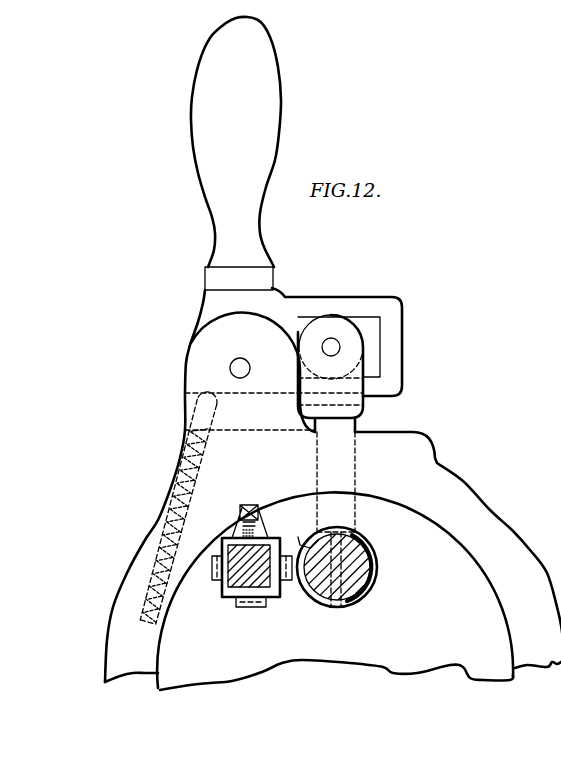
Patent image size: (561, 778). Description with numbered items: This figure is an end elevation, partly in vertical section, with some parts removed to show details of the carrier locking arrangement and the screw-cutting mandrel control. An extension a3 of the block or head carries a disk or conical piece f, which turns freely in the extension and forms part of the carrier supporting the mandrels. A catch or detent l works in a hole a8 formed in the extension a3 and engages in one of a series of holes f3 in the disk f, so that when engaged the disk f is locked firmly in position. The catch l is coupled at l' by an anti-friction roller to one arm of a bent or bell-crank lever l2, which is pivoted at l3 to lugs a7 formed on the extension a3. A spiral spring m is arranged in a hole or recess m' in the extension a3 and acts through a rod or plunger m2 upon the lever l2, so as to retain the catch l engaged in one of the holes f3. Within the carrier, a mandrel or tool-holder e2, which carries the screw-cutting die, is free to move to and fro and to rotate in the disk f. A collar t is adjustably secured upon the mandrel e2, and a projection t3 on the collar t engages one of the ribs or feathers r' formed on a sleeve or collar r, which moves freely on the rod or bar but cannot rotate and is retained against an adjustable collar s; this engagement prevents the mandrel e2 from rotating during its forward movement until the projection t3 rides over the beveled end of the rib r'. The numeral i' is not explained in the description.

The extension a3 is at (333, 486).
The lugs a7 is at (274, 372).
The hole a8 is at (336, 482).
The catch or detent l is at (334, 373).
The coupling of catch to lever l' is at (331, 347).
The bent or bell-crank lever l2 is at (321, 342).
The pivot l3 is at (242, 359).
The spiral spring m is at (178, 511).
The hole or recess m' is at (187, 526).
The rod or plunger m2 is at (197, 406).
The disk or conical piece f is at (335, 591).
The holes f3 is at (350, 527).
The mandrel or tool-holder e2 is at (337, 567).
The collar t is at (378, 565).
The projection t3 is at (300, 530).
The inner tube wall i' is at (359, 581).
The sleeve or collar r is at (245, 551).
The ribs or feathers r' is at (243, 592).
The collar s is at (262, 607).